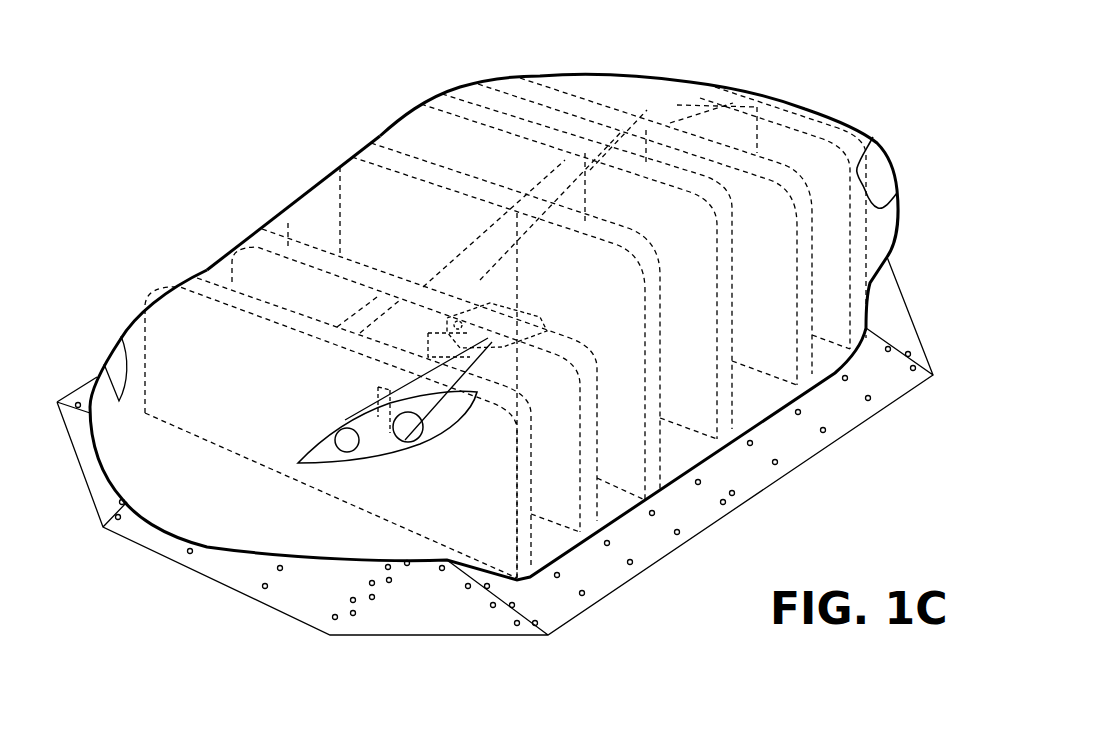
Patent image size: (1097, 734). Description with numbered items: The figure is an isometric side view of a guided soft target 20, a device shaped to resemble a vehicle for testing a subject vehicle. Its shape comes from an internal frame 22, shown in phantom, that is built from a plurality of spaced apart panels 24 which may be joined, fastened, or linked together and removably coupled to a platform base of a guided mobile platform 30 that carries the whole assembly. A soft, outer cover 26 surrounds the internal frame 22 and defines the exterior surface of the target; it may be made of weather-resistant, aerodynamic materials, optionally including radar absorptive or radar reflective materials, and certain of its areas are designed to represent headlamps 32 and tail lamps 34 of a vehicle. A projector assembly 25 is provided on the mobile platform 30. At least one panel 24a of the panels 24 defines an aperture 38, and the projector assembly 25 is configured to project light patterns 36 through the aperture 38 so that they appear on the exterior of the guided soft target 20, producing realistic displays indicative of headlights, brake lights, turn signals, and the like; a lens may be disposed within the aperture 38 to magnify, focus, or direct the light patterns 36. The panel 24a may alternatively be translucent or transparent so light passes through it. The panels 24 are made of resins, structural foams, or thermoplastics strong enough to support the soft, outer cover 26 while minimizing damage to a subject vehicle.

The guided soft target 20 is at (906, 92).
The internal frame 22 is at (375, 120).
The panels 24 is at (602, 78).
The panel 24a is at (525, 530).
The projector assembly 25 is at (542, 302).
The soft, outer cover 26 is at (222, 263).
The mobile platform 30 is at (860, 423).
The headlamps 32 is at (117, 350).
The tail lamps 34 is at (897, 173).
The light patterns 36 is at (418, 449).
The aperture 38 is at (497, 373).